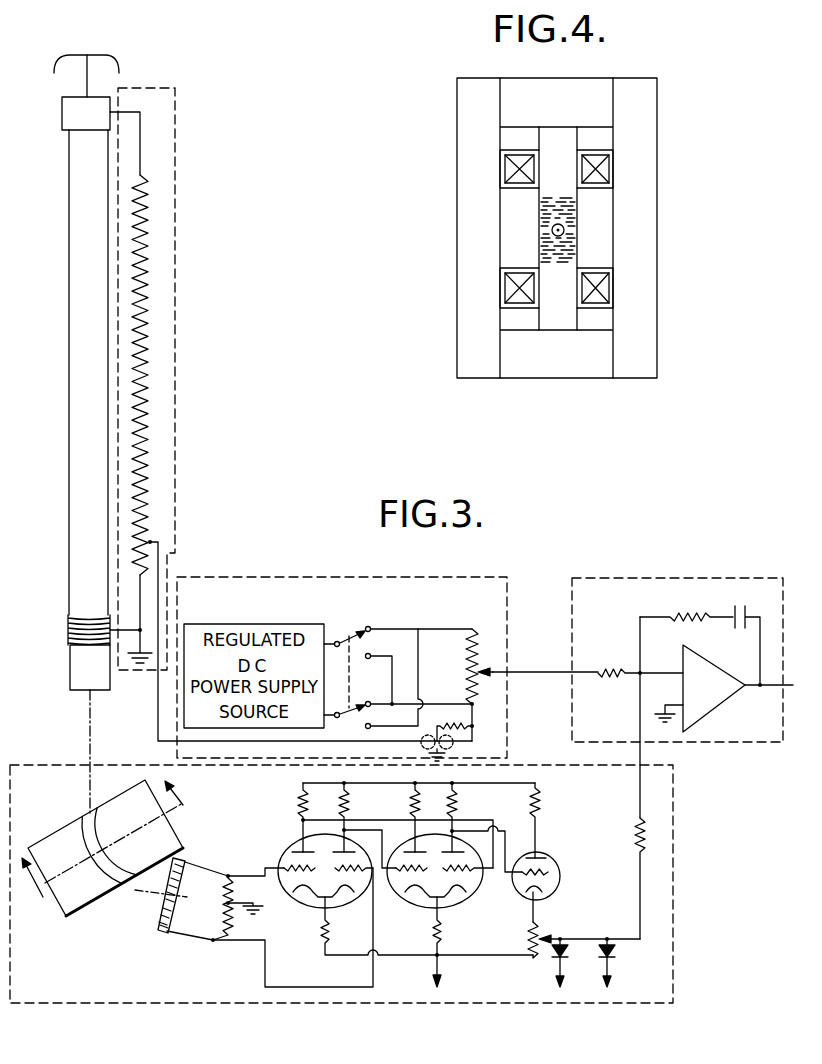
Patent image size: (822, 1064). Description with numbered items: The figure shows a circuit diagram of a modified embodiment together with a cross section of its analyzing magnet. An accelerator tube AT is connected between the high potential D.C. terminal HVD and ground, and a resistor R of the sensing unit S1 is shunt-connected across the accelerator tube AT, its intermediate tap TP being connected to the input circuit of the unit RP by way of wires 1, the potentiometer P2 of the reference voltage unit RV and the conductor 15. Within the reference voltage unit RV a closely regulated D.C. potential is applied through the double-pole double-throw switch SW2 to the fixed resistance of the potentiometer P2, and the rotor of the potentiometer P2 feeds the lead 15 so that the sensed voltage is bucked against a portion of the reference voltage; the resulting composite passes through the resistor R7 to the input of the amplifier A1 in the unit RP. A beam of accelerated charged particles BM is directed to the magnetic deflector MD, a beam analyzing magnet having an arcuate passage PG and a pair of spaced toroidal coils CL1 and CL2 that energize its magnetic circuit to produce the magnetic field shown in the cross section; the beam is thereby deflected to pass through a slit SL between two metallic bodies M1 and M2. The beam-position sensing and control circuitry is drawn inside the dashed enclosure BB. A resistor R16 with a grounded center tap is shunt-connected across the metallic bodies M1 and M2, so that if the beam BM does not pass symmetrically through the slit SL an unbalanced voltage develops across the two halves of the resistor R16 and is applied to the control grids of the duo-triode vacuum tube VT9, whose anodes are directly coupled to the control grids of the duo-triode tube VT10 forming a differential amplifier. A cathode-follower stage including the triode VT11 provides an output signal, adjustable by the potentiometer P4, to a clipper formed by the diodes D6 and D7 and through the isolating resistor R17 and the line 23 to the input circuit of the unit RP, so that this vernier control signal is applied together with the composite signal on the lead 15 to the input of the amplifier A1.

In FIG. 3, the high potential D.C. terminal HVD is at (93, 55).
In FIG. 3, the accelerator tube AT is at (96, 363).
In FIG. 3, the sensing unit S1 is at (176, 224).
In FIG. 3, the resistor R is at (148, 350).
In FIG. 3, the intermediate tap TP is at (150, 542).
In FIG. 3, the beam of accelerated charged particles BM is at (90, 736).
In FIG. 3, the wires 1 is at (158, 726).
In FIG. 3, the reference voltage unit RV is at (457, 576).
In FIG. 3, the double-pole double-throw switch SW2 is at (353, 633).
In FIG. 3, the potentiometer P2 is at (466, 656).
In FIG. 3, the lead 15 is at (533, 672).
In FIG. 3, the unit RP is at (662, 578).
In FIG. 3, the resistor R7 is at (603, 672).
In FIG. 3, the amplifier A1 is at (712, 697).
In FIG. 3, the line 23 is at (642, 749).
In FIG. 3, the beam bending unit BB is at (41, 765).
In FIG. 3, the magnetic deflector MD is at (80, 820).
In FIG. 4, the magnetic deflector MD is at (528, 78).
In FIG. 3, the arcuate passage PG is at (122, 878).
In FIG. 4, the arcuate passage PG is at (562, 227).
In FIG. 3, the metallic body M2 is at (183, 855).
In FIG. 3, the metallic body M1 is at (160, 927).
In FIG. 3, the slit SL is at (177, 905).
In FIG. 3, the resistor R16 is at (233, 884).
In FIG. 3, the duo-triode vacuum tube VT9 is at (335, 908).
In FIG. 3, the duo-triode tube VT10 is at (468, 902).
In FIG. 3, the triode VT11 is at (548, 854).
In FIG. 3, the potentiometer P4 is at (520, 927).
In FIG. 3, the isolating resistor R17 is at (637, 825).
In FIG. 3, the diode D6 is at (552, 950).
In FIG. 3, the diode D7 is at (613, 950).
In FIG. 4, the toroidal coil CL1 is at (505, 163).
In FIG. 4, the toroidal coil CL2 is at (606, 165).